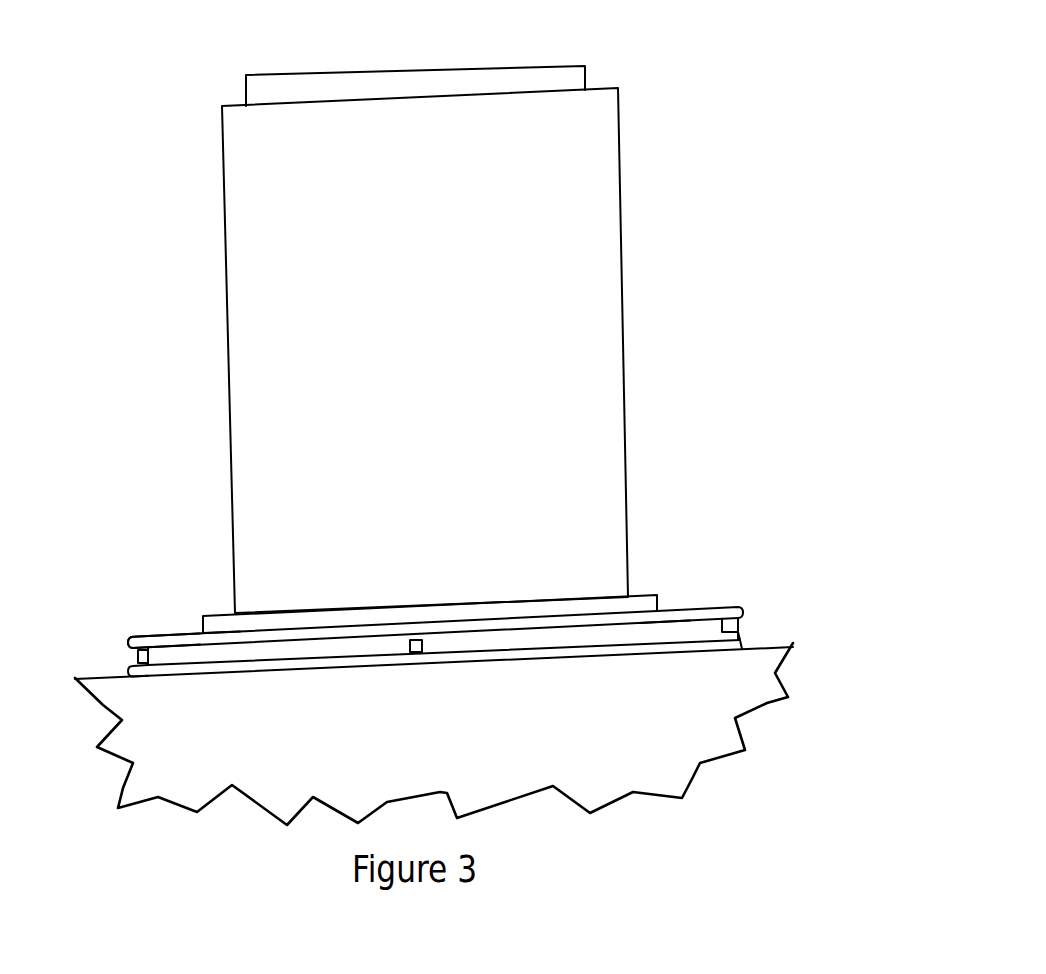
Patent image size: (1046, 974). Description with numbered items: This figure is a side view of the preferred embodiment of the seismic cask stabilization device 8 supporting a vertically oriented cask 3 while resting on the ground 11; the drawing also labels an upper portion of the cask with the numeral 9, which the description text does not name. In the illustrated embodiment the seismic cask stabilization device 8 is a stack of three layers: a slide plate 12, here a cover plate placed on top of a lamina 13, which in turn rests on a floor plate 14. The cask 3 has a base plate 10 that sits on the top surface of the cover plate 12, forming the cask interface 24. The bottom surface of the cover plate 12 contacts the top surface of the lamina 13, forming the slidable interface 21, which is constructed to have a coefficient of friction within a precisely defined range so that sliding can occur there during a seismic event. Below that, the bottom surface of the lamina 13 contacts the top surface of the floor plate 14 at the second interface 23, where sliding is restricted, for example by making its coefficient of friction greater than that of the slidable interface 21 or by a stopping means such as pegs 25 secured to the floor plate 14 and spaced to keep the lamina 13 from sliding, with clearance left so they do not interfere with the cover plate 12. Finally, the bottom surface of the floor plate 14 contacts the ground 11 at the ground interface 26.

The cask 3 is at (690, 240).
The seismic cask stabilization device 8 is at (758, 625).
The top plate 9 is at (586, 77).
The base plate 10 is at (602, 607).
The ground 11 is at (677, 772).
The slide plate 12 is at (738, 606).
The lamina 13 is at (710, 606).
The floor plate 14 is at (738, 643).
The slidable interface 21 is at (170, 640).
The second interface 23 is at (663, 637).
The cask interface 24 is at (225, 634).
The pegs 25 is at (138, 657).
The ground interface 26 is at (196, 674).